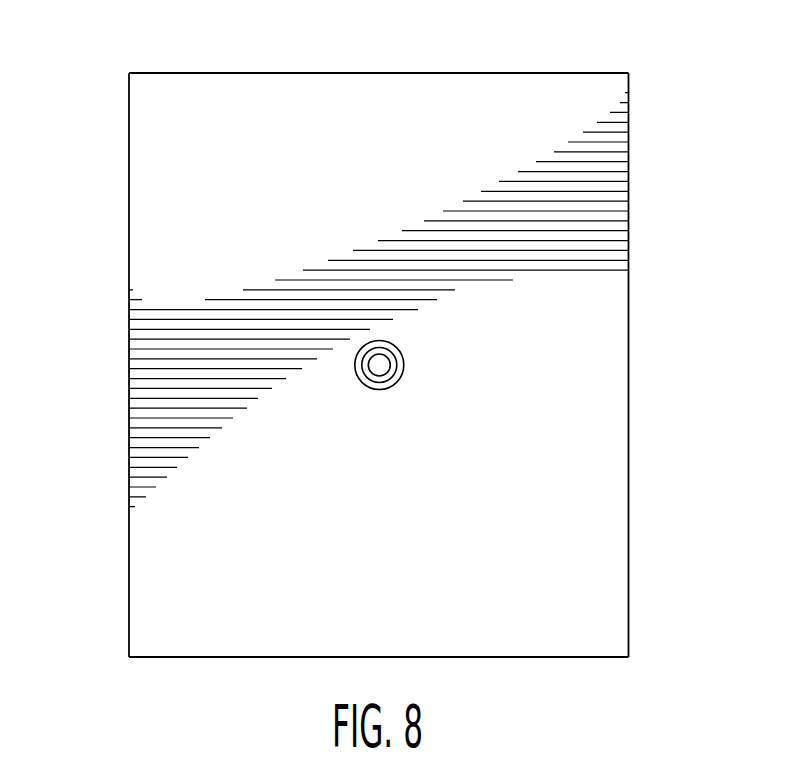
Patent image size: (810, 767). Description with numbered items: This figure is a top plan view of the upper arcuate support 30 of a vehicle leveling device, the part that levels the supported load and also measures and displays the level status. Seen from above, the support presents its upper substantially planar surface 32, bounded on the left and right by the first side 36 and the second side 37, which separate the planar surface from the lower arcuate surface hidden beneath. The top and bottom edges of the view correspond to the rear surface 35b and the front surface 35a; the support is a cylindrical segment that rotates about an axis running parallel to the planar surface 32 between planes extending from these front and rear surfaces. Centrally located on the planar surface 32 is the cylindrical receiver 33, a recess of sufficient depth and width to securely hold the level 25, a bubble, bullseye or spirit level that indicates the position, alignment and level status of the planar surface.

The upper arcuate support 30 is at (690, 512).
The upper substantially planar surface 32 is at (160, 161).
The level 25 is at (379, 365).
The cylindrical receiver 33 is at (403, 372).
The front surface 35a is at (225, 657).
The rear surface 35b is at (316, 73).
The first side 36 is at (129, 528).
The second side 37 is at (628, 638).